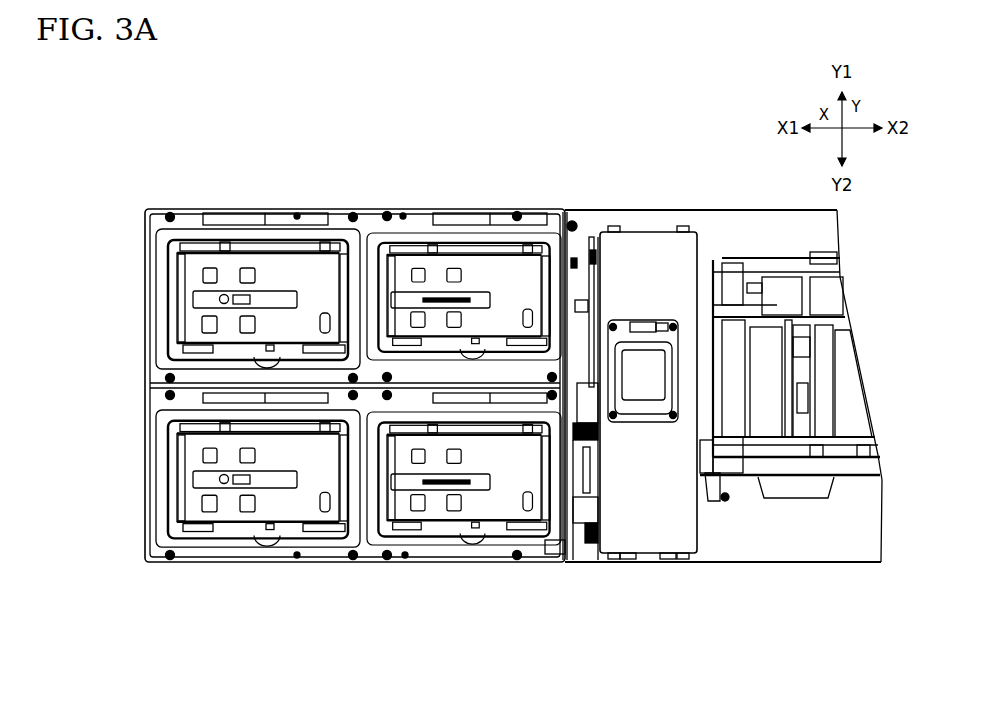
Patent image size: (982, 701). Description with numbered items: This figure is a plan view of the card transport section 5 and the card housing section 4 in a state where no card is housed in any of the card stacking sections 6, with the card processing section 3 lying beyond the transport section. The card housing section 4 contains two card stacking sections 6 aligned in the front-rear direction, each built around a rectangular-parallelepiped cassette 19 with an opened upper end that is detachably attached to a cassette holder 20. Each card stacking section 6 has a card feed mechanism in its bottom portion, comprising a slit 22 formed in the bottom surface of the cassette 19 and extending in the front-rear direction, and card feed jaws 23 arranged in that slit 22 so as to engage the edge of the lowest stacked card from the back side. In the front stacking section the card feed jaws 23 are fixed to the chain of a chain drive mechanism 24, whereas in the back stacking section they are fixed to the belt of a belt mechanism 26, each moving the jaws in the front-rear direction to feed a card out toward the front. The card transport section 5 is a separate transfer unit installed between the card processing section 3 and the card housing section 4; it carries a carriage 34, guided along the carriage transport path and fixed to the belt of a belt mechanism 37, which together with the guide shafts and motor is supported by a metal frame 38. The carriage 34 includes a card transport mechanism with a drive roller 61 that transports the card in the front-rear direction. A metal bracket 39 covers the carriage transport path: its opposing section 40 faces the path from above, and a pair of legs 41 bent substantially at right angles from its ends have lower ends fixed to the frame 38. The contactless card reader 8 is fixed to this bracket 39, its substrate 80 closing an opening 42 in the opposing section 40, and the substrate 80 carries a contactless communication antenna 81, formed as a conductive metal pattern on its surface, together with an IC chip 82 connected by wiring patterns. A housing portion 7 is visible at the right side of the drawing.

The card processing section 3 is at (766, 230).
The card housing section 4 is at (154, 573).
The card transport section 5 is at (647, 222).
The card stacking section 6 is at (297, 213).
The housing 7 is at (812, 540).
The contactless card reader 8 is at (660, 412).
The cassette 19 is at (312, 255).
The cassette holder 20 is at (160, 270).
The slit 22 is at (268, 292).
The card feed jaws 23 is at (236, 295).
The chain drive mechanism 24 is at (456, 298).
The belt mechanism 26 is at (205, 296).
The carriage 34 is at (710, 503).
The belt mechanism 37 is at (552, 238).
The frame 38 is at (589, 250).
The bracket 39 is at (621, 568).
The opposing section 40 is at (622, 248).
The legs 41 is at (672, 226).
The opening 42 is at (662, 320).
The drive roller 61 is at (555, 554).
The substrate 80 is at (655, 416).
The contactless communication antenna 81 is at (630, 403).
The IC chip 82 is at (641, 322).